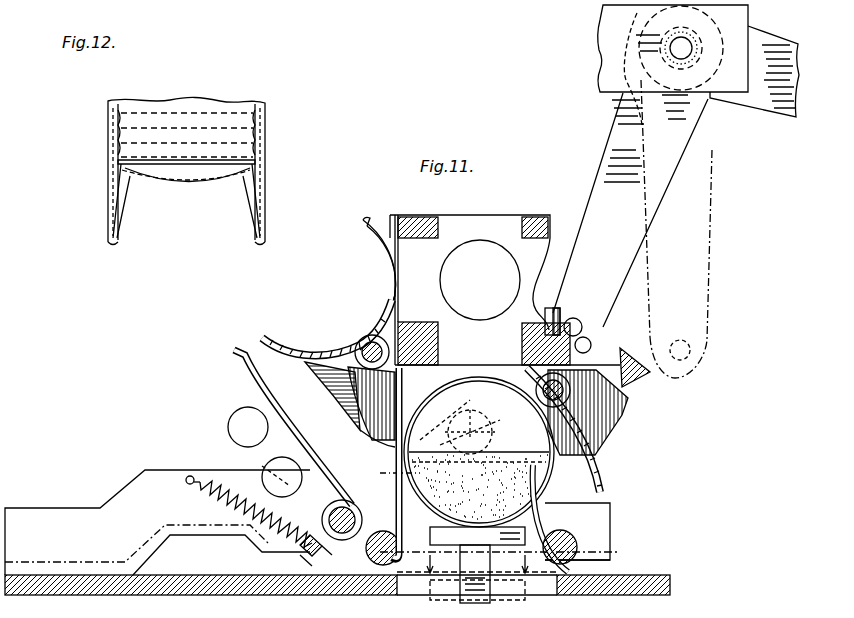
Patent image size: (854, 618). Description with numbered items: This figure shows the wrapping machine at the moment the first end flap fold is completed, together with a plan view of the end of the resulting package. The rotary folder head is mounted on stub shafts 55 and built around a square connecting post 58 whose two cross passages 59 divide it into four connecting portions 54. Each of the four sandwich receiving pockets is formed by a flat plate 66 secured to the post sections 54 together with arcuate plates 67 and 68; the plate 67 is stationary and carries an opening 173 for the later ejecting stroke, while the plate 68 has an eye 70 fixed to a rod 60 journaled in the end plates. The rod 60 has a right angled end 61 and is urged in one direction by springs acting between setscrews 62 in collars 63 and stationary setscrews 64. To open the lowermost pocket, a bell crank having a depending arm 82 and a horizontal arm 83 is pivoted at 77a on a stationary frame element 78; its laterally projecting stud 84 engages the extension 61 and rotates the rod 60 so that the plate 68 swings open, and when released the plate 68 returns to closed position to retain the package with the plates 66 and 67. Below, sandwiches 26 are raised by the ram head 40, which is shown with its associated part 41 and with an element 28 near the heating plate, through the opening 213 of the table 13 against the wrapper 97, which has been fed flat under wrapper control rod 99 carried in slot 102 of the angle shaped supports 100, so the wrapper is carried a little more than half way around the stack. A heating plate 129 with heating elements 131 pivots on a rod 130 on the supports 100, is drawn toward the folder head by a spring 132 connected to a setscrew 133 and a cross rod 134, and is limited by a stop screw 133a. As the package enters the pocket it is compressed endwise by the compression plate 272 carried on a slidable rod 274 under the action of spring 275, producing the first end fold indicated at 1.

In FIG. 12, the first end fold 1 is at (196, 176).
In FIG. 11, the first end fold 1 is at (479, 452).
In FIG. 11, the table 13 is at (350, 596).
In FIG. 12, the sandwich 26 is at (210, 125).
In FIG. 11, the sandwich 26 is at (479, 485).
In FIG. 11, the roller 28 is at (386, 532).
In FIG. 11, the ram head 40 is at (477, 536).
In FIG. 11, the stem 41 is at (500, 574).
In FIG. 11, the connecting portions 54 is at (524, 345).
In FIG. 11, the stub shafts 55 is at (480, 280).
In FIG. 11, the square connecting post 58 is at (440, 216).
In FIG. 11, the cross passages 59 is at (440, 335).
In FIG. 11, the rod 60 is at (575, 391).
In FIG. 11, the right angled end 61 is at (548, 292).
In FIG. 11, the setscrews 62 is at (626, 419).
In FIG. 11, the collars 63 is at (583, 393).
In FIG. 11, the stationary setscrews 64 is at (409, 463).
In FIG. 11, the flat plate 66 is at (387, 446).
In FIG. 11, the arcuate plate 67 is at (520, 365).
In FIG. 11, the arcuate plate 68 is at (605, 472).
In FIG. 11, the eye 70 is at (353, 375).
In FIG. 11, the pivot 77a is at (672, 40).
In FIG. 11, the stationary frame element 78 is at (605, 22).
In FIG. 11, the depending arm 82 is at (640, 126).
In FIG. 11, the horizontal arm 83 is at (774, 110).
In FIG. 11, the laterally projecting stud 84 is at (708, 336).
In FIG. 12, the wrapper 97 is at (120, 226).
In FIG. 11, the wrapper 97 is at (535, 506).
In FIG. 11, the wrapper control rod 99 is at (572, 545).
In FIG. 11, the angle shaped supports 100 is at (610, 512).
In FIG. 11, the slot 102 is at (606, 546).
In FIG. 11, the heating plate 129 is at (258, 398).
In FIG. 11, the rod 130 is at (342, 510).
In FIG. 11, the heating elements 131 is at (262, 462).
In FIG. 11, the spring 132 is at (205, 488).
In FIG. 11, the setscrew 133 is at (326, 559).
In FIG. 11, the stop screw 133a is at (262, 546).
In FIG. 11, the cross rod 134 is at (186, 477).
In FIG. 11, the opening 173 is at (486, 365).
In FIG. 11, the opening 213 is at (402, 598).
In FIG. 11, the compression plate 272 is at (383, 470).
In FIG. 11, the rod 274 is at (468, 417).
In FIG. 11, the spring 275 is at (487, 432).